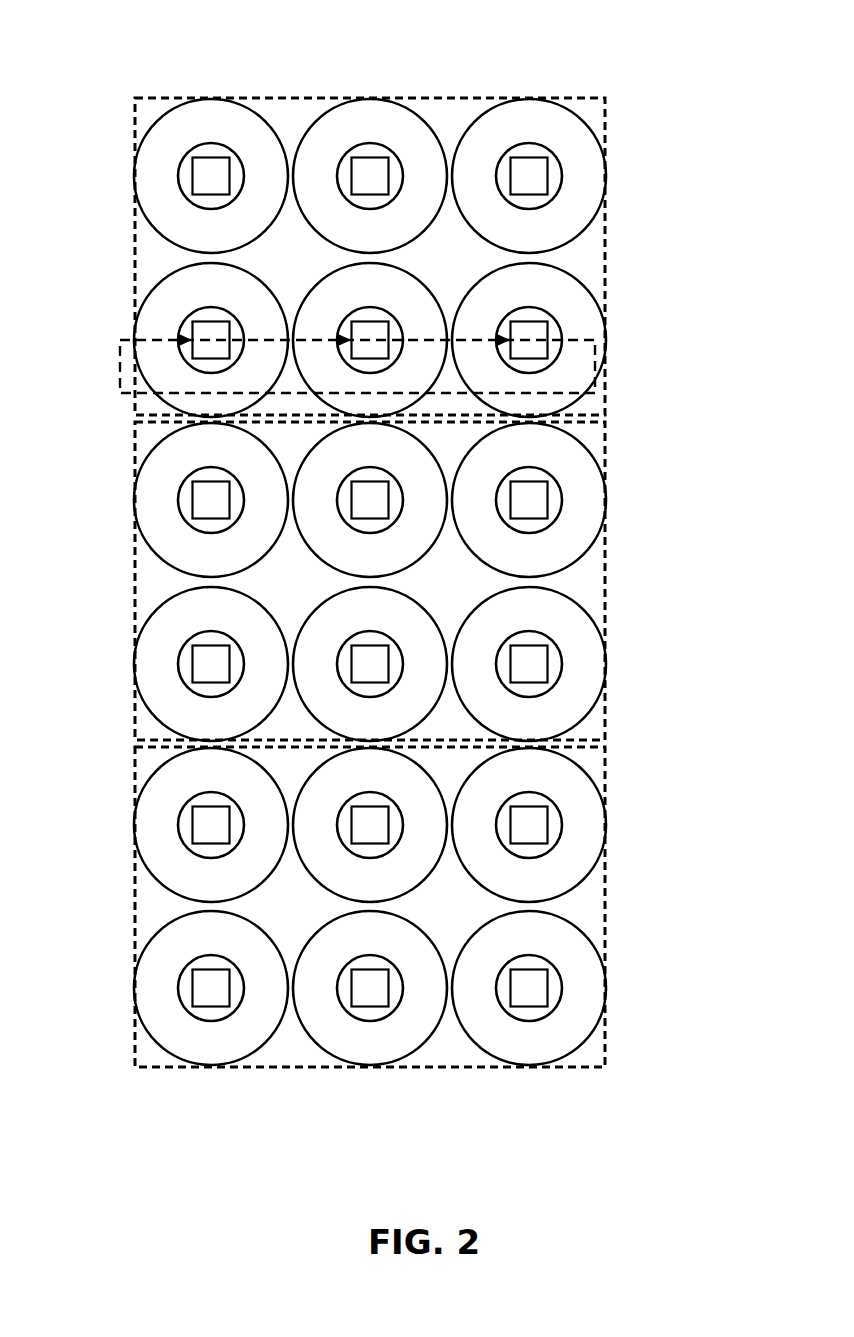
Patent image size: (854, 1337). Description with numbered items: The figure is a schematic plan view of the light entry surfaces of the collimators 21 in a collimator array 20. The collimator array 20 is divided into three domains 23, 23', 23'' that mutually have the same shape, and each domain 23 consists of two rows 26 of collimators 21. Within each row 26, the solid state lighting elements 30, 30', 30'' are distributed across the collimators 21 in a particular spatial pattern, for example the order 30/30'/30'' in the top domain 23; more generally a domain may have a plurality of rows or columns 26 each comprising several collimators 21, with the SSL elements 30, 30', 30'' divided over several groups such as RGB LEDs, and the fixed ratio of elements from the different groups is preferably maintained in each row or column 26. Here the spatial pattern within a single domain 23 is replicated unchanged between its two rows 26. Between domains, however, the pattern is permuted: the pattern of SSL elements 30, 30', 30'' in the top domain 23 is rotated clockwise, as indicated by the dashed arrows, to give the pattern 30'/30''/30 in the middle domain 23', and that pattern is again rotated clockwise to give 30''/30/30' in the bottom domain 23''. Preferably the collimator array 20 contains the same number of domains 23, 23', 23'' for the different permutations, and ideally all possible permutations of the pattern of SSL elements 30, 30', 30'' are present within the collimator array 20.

The collimator array 20 is at (406, 1178).
The collimator 21 is at (142, 178).
The domain 23 is at (428, 256).
The middle domain 23' is at (432, 581).
The bottom domain 23'' is at (434, 907).
The row 26 is at (634, 168).
The solid state lighting element 30 is at (340, 576).
The solid state lighting element 30' is at (312, 573).
The solid state lighting element 30'' is at (367, 573).